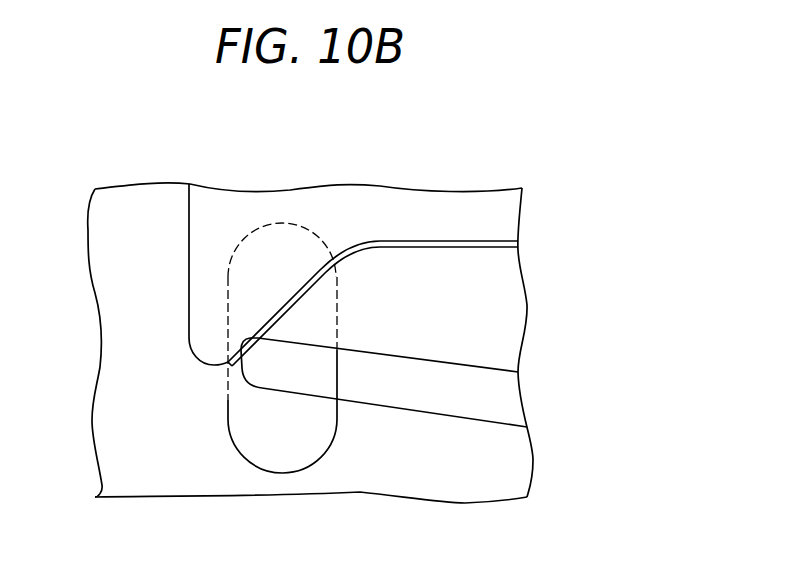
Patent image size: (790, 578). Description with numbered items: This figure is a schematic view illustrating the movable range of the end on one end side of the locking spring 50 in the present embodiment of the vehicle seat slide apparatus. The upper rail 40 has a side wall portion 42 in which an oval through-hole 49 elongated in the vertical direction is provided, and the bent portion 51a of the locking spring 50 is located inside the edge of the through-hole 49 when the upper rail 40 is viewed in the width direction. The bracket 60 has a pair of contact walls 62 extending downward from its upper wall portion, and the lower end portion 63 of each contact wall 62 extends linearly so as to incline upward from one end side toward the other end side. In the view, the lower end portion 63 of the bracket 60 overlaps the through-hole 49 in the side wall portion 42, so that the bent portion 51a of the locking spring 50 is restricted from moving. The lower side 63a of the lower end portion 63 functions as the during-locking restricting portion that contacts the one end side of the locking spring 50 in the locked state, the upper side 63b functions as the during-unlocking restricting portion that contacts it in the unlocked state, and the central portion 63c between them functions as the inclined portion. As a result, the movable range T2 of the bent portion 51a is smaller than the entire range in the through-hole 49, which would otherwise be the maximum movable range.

The bracket 60 is at (383, 208).
The contact wall 62 is at (189, 269).
The lower end portion 63 is at (211, 365).
The lower side 63a is at (242, 352).
The upper side 63b is at (318, 293).
The central portion 63c is at (283, 331).
The upper rail 40 is at (512, 280).
The side wall portion 42 is at (518, 313).
The locking spring 50 is at (441, 362).
The bent portion 51a is at (228, 370).
The through-hole 49 is at (250, 454).
The movable range T2 is at (325, 318).